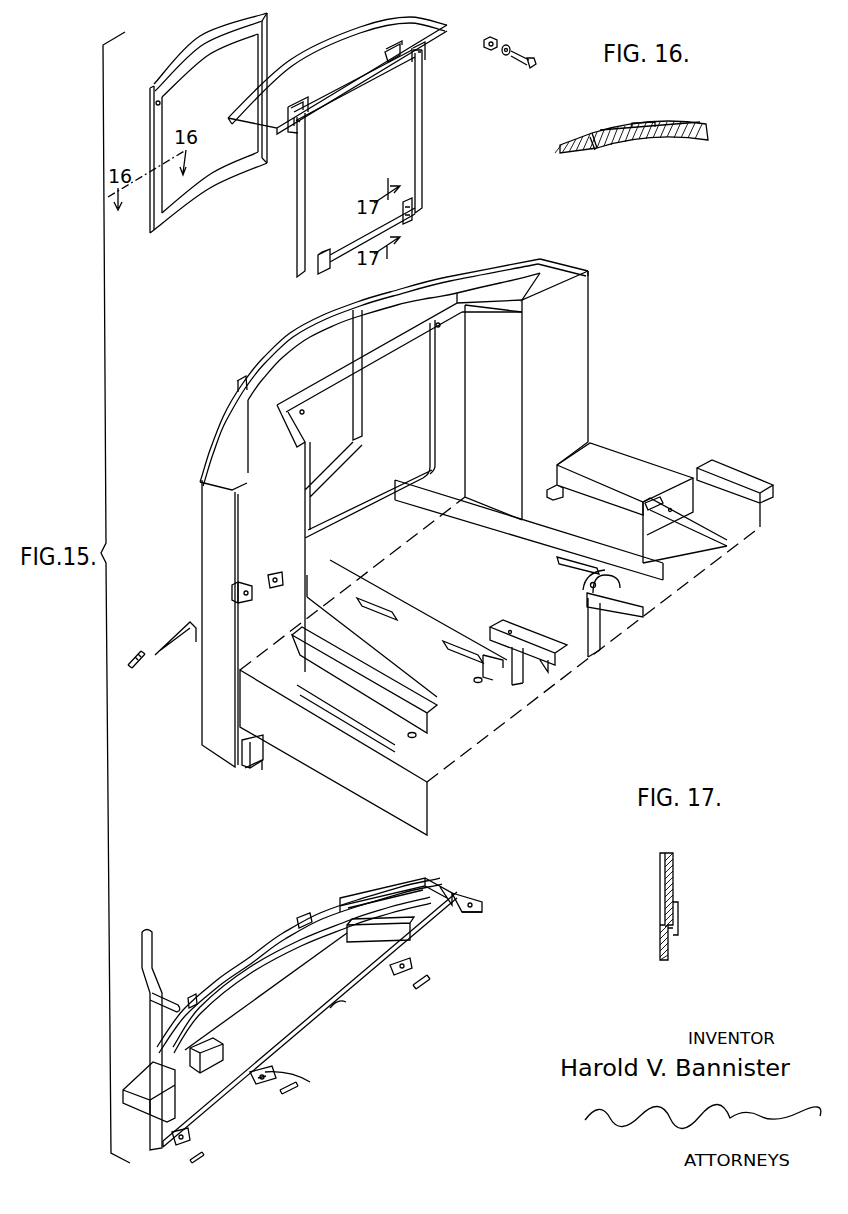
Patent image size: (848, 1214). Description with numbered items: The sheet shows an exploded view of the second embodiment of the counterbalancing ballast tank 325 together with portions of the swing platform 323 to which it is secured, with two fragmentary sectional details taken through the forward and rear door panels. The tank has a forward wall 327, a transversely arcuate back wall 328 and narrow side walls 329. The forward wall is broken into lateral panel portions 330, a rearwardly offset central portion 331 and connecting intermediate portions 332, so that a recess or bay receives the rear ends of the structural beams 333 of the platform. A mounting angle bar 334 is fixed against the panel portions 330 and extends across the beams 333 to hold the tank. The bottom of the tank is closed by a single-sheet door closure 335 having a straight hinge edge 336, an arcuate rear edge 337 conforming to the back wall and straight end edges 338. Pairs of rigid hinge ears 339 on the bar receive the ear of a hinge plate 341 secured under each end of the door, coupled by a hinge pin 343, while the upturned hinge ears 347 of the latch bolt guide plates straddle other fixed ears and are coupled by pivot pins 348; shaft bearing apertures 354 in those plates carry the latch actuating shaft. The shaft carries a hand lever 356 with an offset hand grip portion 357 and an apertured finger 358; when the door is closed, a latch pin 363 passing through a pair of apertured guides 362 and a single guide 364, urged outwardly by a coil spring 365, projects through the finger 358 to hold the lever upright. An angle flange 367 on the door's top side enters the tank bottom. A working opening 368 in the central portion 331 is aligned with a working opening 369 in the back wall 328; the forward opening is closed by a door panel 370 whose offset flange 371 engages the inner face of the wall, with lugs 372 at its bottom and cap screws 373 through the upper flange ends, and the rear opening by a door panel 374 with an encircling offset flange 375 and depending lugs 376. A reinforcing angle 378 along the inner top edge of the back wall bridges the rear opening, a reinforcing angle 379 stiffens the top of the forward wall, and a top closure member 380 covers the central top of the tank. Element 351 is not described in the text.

In FIG. 15, the swing platform 323 is at (355, 788).
In FIG. 15, the ballast tank 325 is at (562, 262).
In FIG. 15, the forward wall 327 is at (587, 300).
In FIG. 15, the back wall 328 is at (447, 272).
In FIG. 15, the side walls 329 is at (204, 517).
In FIG. 15, the lateral panel portions 330 is at (575, 400).
In FIG. 15, the central portion 331 is at (456, 320).
In FIG. 15, the intermediate portions 332 is at (505, 400).
In FIG. 15, the structural beams 333 is at (541, 551).
In FIG. 15, the mounting angle bar 334 is at (250, 740).
In FIG. 15, the door closure 335 is at (432, 896).
In FIG. 15, the hinge edge 336 is at (338, 1006).
In FIG. 15, the arcuate rear edge 337 is at (250, 950).
In FIG. 15, the end edges 338 is at (458, 898).
In FIG. 15, the hinge ears 339 is at (250, 770).
In FIG. 15, the hinge plate 341 is at (178, 1140).
In FIG. 15, the hinge pin 343 is at (204, 1156).
In FIG. 15, the hinge ears 347 is at (300, 1088).
In FIG. 15, the pivot pins 348 is at (418, 994).
In FIG. 15, the inner rail 351 is at (306, 916).
In FIG. 15, the shaft bearing apertures 354 is at (242, 1085).
In FIG. 15, the hand lever 356 is at (150, 1040).
In FIG. 15, the hand grip portion 357 is at (142, 942).
In FIG. 15, the apertured finger 358 is at (165, 998).
In FIG. 15, the apertured guides 362 is at (248, 600).
In FIG. 15, the latch pin 363 is at (165, 655).
In FIG. 15, the guide 364 is at (275, 572).
In FIG. 15, the coil spring 365 is at (135, 650).
In FIG. 15, the angle flange 367 is at (375, 893).
In FIG. 15, the working opening 368 is at (430, 421).
In FIG. 15, the working opening 369 is at (360, 344).
In FIG. 15, the door panel 370 is at (405, 145).
In FIG. 17, the door panel 370 is at (660, 877).
In FIG. 15, the offset flange 371 is at (302, 198).
In FIG. 17, the offset flange 371 is at (661, 950).
In FIG. 15, the lugs 372 is at (414, 210).
In FIG. 17, the lugs 372 is at (680, 924).
In FIG. 15, the cap screws 373 is at (536, 60).
In FIG. 15, the door panel 374 is at (256, 50).
In FIG. 16, the door panel 374 is at (674, 126).
In FIG. 15, the offset flange 375 is at (212, 182).
In FIG. 16, the offset flange 375 is at (575, 143).
In FIG. 16, the depending lugs 376 is at (645, 122).
In FIG. 15, the reinforcing angle 378 is at (222, 418).
In FIG. 15, the reinforcing angle 379 is at (560, 279).
In FIG. 15, the top closure member 380 is at (415, 30).